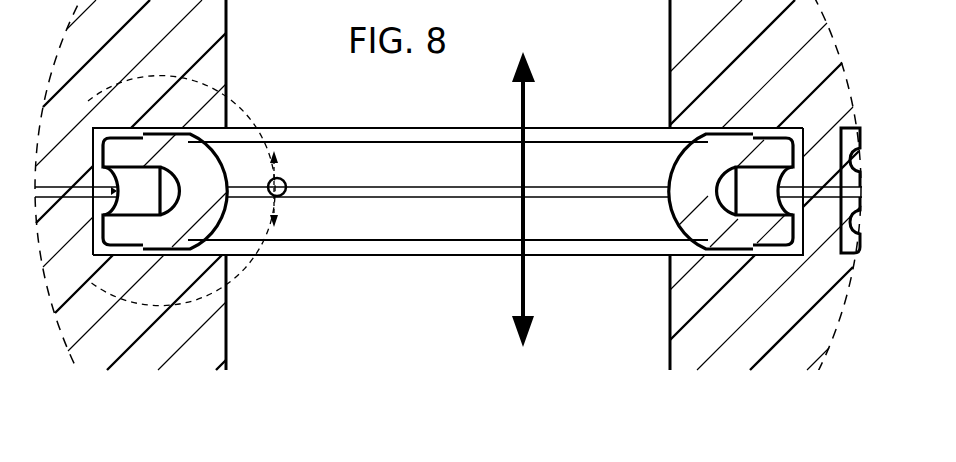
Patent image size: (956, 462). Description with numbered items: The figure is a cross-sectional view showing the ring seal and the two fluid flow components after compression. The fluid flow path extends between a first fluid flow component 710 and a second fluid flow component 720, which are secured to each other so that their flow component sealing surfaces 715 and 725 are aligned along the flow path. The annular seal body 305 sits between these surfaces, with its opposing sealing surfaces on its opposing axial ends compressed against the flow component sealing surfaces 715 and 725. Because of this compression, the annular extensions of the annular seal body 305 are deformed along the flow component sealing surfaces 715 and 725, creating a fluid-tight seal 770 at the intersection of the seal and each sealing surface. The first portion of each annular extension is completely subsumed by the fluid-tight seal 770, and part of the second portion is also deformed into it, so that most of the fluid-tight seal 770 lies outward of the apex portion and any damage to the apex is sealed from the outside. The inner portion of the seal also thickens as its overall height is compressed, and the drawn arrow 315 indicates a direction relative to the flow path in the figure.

The annular seal body 305 is at (390, 168).
The direction of movement arrow 315 is at (527, 287).
The first fluid flow component 710 is at (177, 323).
The flow component sealing surface 715 is at (245, 238).
The second fluid flow component 720 is at (185, 60).
The flow component sealing surface 725 is at (245, 143).
The fluid-tight seal 770 is at (145, 165).